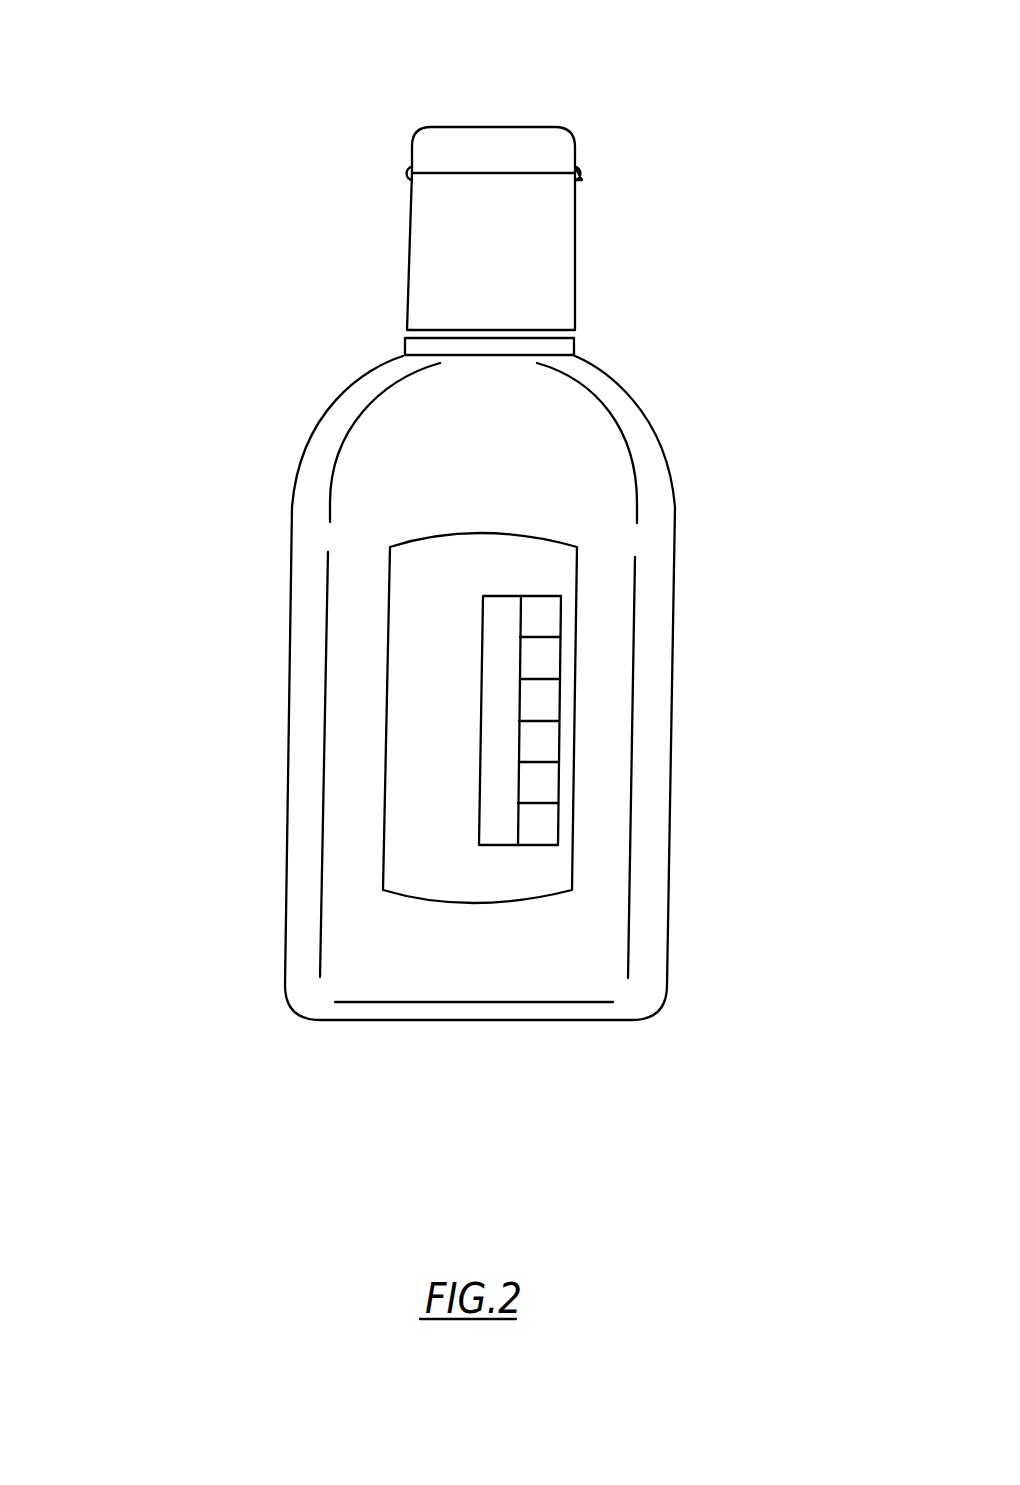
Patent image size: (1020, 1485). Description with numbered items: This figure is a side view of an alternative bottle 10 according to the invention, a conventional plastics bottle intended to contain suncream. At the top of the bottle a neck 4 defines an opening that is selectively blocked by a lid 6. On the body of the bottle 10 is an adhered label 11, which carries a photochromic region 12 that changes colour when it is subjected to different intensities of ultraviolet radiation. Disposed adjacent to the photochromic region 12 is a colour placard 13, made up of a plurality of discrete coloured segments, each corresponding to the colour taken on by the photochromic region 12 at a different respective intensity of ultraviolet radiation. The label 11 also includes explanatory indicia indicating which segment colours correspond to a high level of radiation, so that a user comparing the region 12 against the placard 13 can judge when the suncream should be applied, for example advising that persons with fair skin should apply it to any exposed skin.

The neck 4 is at (392, 343).
The lid 6 is at (481, 116).
The alternative bottle 10 is at (185, 710).
The adhered label 11 is at (483, 523).
The photochromic region 12 is at (505, 588).
The colour placard 13 is at (538, 857).